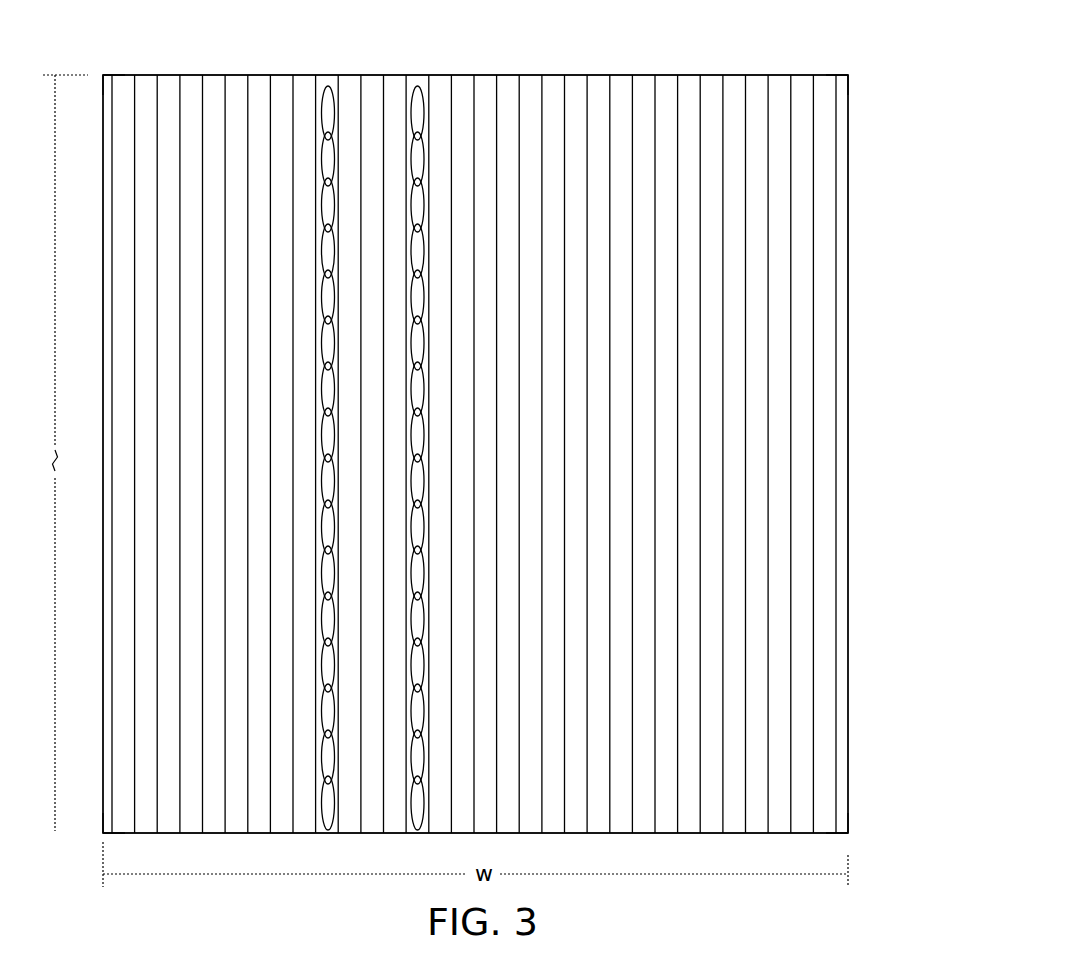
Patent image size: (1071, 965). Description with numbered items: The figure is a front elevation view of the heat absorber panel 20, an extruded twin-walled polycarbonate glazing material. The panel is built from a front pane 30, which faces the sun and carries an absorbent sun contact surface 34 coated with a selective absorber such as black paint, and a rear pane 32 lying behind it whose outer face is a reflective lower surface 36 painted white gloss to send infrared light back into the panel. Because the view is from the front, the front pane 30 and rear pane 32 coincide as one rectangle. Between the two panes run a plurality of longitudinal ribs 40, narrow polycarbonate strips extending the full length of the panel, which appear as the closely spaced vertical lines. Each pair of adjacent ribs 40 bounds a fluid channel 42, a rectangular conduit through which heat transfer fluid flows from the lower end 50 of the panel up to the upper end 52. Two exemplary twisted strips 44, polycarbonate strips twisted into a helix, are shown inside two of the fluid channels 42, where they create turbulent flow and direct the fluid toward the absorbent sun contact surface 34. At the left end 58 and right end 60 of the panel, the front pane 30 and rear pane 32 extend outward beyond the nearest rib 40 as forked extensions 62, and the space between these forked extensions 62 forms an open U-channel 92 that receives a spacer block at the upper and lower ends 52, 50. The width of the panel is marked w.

The heat absorber panel 20 is at (101, 57).
The front pane 30 is at (644, 424).
The absorbent sun contact surface 34 is at (578, 158).
The rear pane 32 is at (774, 424).
The reflective lower surface 36 is at (701, 153).
The longitudinal ribs 40 is at (768, 212).
The fluid channels 42 is at (321, 72).
The twisted strips 44 is at (332, 100).
The lower end 50 is at (778, 833).
The upper end 52 is at (806, 75).
The left end 58 is at (93, 838).
The right end 60 is at (846, 834).
The forked extensions 62 is at (104, 75).
The open U-channel 92 is at (100, 682).